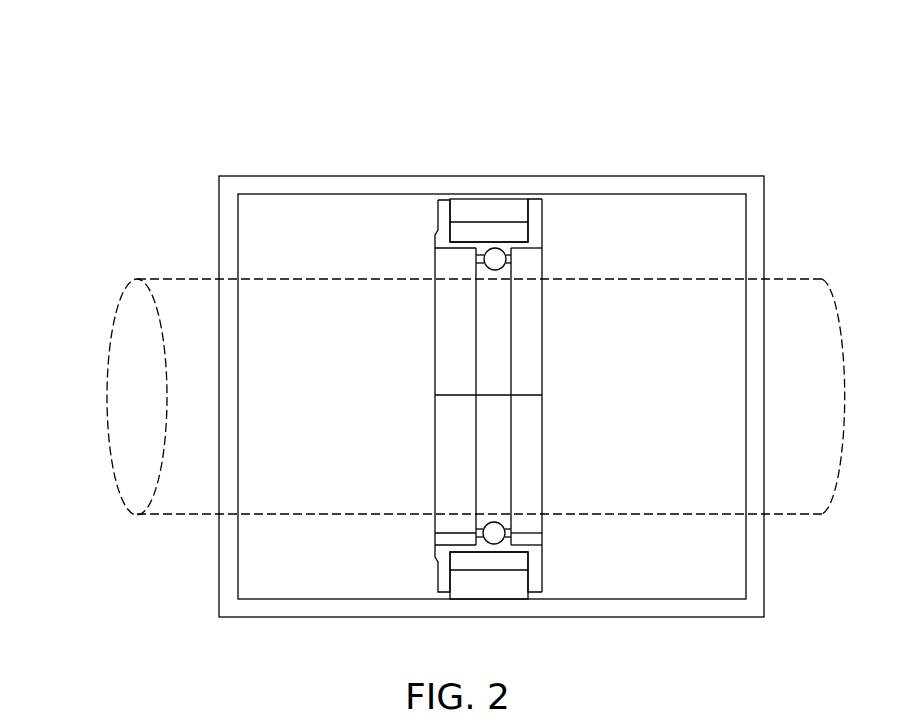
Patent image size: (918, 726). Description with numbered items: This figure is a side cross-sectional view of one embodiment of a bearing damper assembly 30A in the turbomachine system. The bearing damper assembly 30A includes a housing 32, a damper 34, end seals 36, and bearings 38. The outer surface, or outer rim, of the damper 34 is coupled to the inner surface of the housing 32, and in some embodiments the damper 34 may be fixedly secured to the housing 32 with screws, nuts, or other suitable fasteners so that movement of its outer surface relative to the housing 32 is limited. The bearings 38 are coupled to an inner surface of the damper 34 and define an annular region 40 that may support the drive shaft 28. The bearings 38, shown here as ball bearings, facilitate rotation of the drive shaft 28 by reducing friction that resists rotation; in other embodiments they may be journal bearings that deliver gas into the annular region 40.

The bearing damper assembly 30A is at (228, 53).
The housing 32 is at (278, 176).
The damper 34 is at (491, 194).
The end seals 36 is at (428, 194).
The bearings 38 is at (508, 257).
The annular region 40 is at (516, 361).
The drive shaft 28 is at (780, 279).